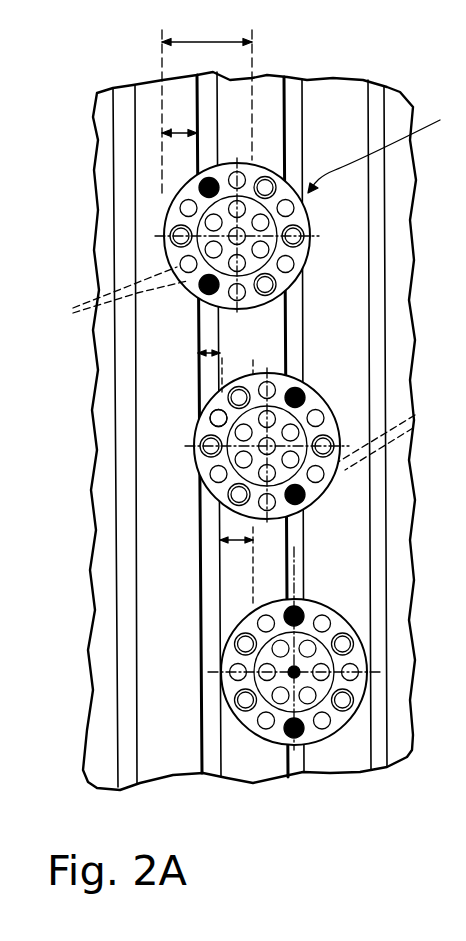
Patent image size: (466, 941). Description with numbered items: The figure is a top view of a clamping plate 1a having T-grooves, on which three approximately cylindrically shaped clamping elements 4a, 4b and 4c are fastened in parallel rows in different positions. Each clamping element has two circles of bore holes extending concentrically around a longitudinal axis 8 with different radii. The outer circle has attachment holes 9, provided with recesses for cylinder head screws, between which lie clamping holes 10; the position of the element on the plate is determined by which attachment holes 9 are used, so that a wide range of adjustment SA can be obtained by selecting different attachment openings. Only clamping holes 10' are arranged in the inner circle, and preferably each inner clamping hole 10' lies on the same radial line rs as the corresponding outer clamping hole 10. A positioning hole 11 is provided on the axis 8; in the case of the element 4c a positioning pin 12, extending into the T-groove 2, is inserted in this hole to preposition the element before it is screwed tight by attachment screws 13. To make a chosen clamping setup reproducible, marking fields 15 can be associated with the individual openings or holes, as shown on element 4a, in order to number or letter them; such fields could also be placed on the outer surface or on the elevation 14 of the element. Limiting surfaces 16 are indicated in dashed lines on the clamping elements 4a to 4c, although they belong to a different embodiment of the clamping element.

The clamping plate 1a is at (332, 95).
The T-groove 2 is at (128, 764).
The range of adjustment SA is at (207, 104).
The radial line rs is at (385, 147).
The clamping element 4a is at (313, 223).
The clamping element 4b is at (310, 383).
The clamping element 4c is at (313, 596).
The longitudinal axis 8 is at (260, 452).
The attachment holes 9 is at (237, 378).
The clamping holes 10 is at (214, 503).
The clamping holes 10' is at (307, 651).
The positioning hole 11 is at (287, 676).
The positioning pin 12 is at (328, 619).
The attachment screws 13 is at (307, 597).
The elevation 14 is at (272, 184).
The marking fields 15 is at (233, 162).
The limiting surfaces 16 is at (241, 368).